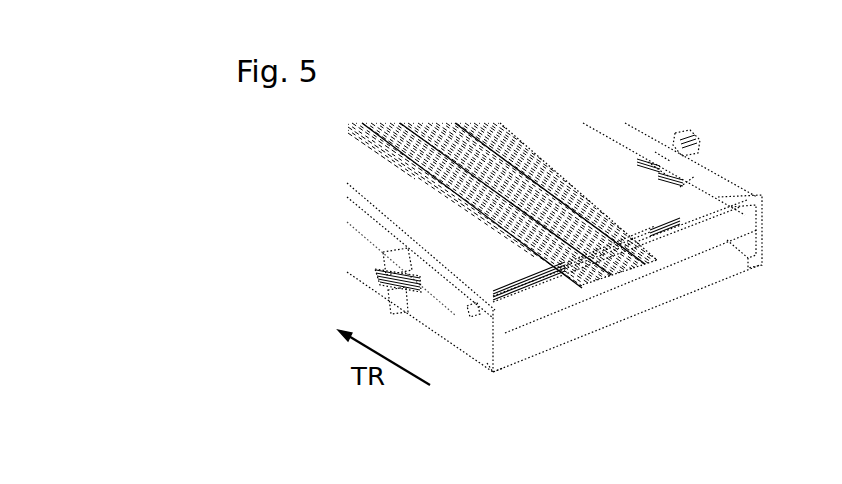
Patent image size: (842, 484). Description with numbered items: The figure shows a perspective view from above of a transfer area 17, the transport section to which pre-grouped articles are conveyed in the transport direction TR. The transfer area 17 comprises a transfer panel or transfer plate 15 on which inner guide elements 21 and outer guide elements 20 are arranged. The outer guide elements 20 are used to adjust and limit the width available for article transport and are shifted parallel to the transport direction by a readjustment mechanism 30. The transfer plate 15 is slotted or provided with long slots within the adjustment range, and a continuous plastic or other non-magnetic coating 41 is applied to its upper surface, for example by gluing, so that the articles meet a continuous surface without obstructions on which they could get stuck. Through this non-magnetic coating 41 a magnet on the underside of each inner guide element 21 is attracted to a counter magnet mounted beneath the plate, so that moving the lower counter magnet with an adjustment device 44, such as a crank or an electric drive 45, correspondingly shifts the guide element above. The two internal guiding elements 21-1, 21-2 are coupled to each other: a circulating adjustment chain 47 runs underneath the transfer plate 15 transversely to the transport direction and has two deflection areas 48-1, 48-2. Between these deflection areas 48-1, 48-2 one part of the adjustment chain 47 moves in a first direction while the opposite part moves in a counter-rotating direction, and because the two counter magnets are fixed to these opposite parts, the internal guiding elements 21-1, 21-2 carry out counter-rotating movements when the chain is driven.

The transfer plate 15 is at (527, 263).
The non-magnetic coating 41 is at (620, 251).
The outer guide elements 20 is at (507, 141).
The inner guide element 21 is at (512, 158).
The first internal guiding element 21-1 is at (527, 182).
The second internal guiding element 21-2 is at (446, 154).
The readjustment mechanism 30 is at (682, 220).
The adjustment device 44 is at (518, 199).
The electric drive 45 is at (695, 148).
The adjustment chain 47 is at (378, 280).
The first deflection area 48-1 is at (385, 282).
The second deflection area 48-2 is at (703, 163).
The transfer area 17 is at (260, 252).